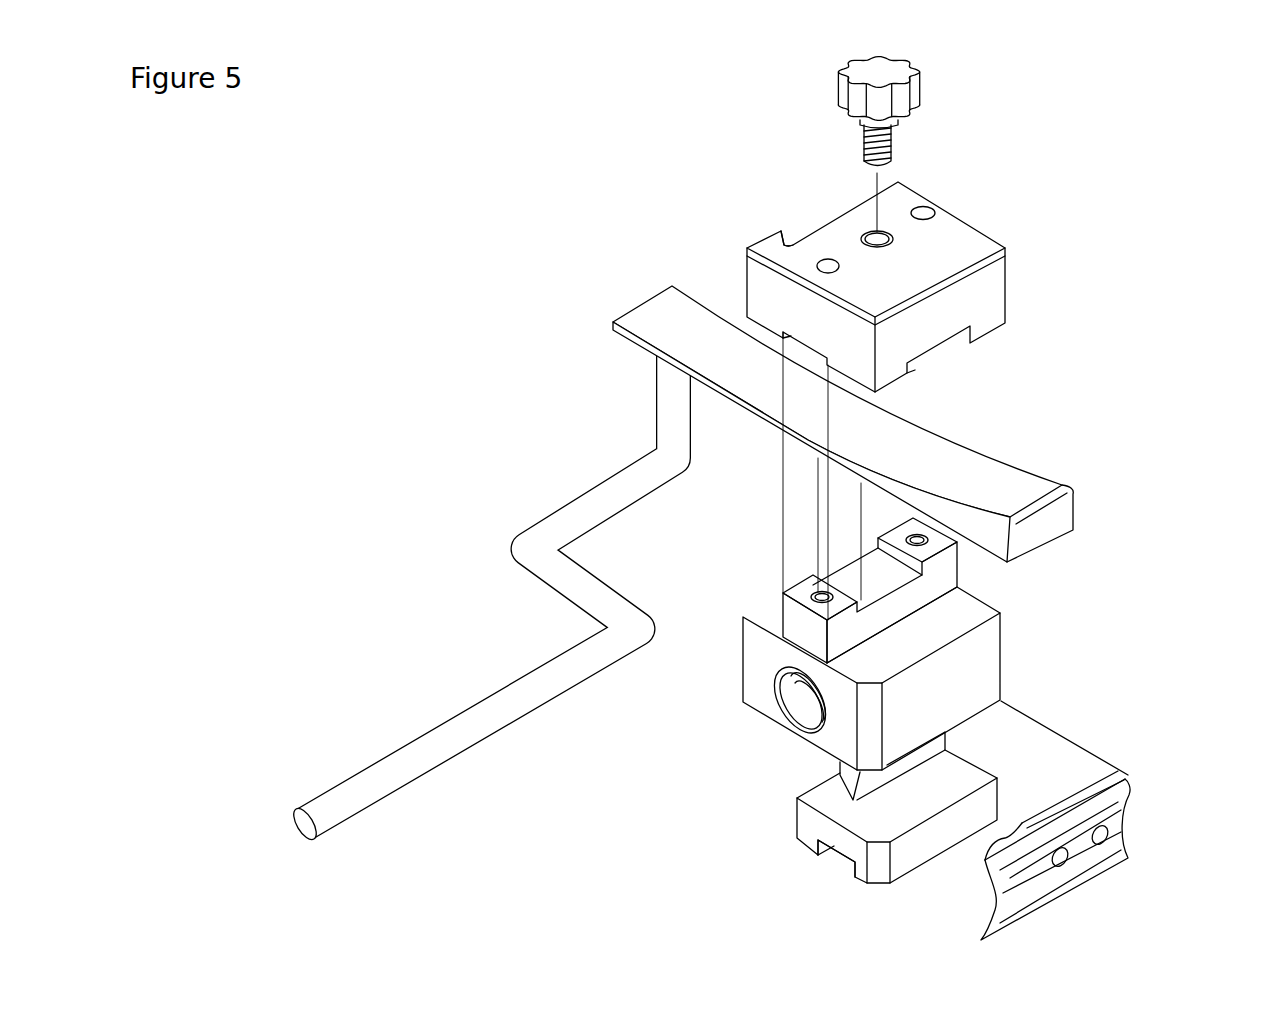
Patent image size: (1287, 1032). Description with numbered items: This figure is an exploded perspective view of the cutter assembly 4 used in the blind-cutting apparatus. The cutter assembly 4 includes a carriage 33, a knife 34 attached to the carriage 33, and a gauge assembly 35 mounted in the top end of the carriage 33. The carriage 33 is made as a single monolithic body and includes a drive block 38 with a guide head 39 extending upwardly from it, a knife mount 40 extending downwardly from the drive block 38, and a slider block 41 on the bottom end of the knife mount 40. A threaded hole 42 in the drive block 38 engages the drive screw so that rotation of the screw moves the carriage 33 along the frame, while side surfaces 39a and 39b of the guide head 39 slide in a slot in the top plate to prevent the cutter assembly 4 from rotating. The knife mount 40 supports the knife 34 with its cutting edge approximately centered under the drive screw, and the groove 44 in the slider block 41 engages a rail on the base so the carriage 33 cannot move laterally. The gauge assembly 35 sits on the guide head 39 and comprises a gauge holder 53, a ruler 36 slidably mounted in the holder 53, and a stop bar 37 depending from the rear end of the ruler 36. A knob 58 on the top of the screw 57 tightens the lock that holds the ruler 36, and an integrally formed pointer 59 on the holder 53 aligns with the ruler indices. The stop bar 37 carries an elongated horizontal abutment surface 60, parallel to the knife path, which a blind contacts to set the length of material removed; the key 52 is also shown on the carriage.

The cutter assembly 4 is at (530, 240).
The carriage 33 is at (651, 790).
The knife 34 is at (1128, 808).
The gauge assembly 35 is at (1145, 376).
The ruler 36 is at (960, 470).
The stop bar 37 is at (597, 497).
The drive block 38 is at (750, 661).
The guide head 39 is at (803, 629).
The side surface 39a is at (788, 595).
The side surface 39b is at (948, 573).
The knife mount 40 is at (950, 742).
The slider block 41 is at (797, 833).
The threaded hole 42 is at (790, 714).
The groove 44 is at (842, 888).
The key 52 is at (837, 784).
The gauge holder 53 is at (1004, 248).
The screw 57 is at (897, 150).
The knob 58 is at (840, 80).
The pointer 59 is at (785, 219).
The abutment surface 60 is at (575, 674).